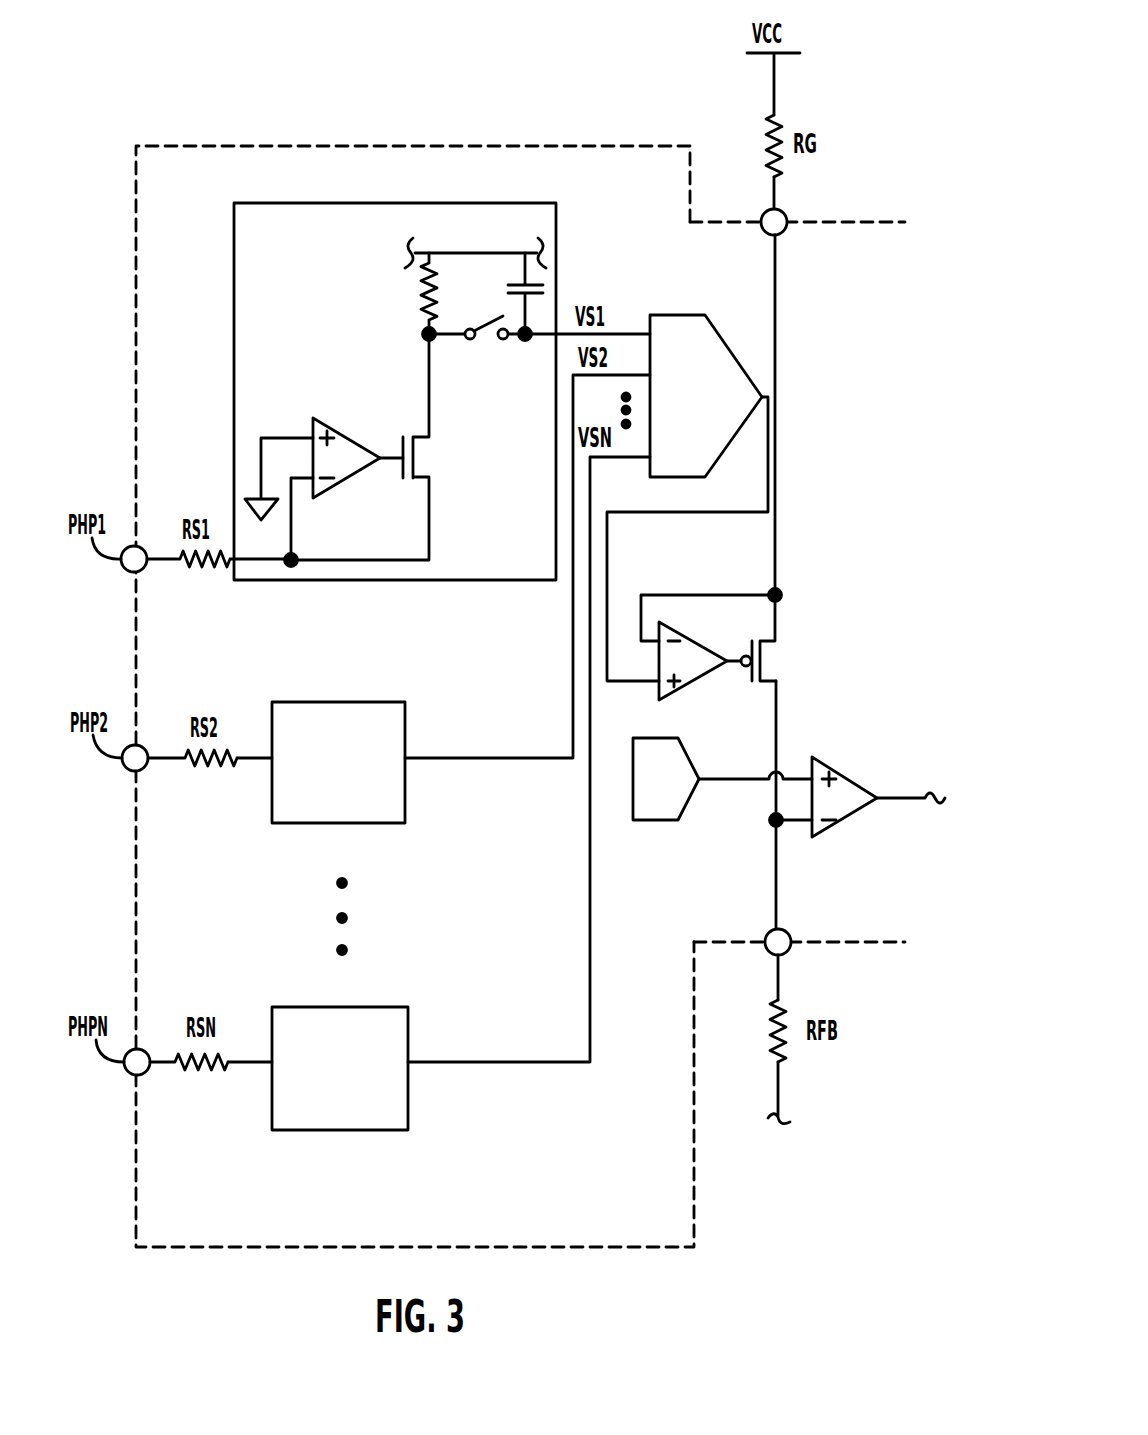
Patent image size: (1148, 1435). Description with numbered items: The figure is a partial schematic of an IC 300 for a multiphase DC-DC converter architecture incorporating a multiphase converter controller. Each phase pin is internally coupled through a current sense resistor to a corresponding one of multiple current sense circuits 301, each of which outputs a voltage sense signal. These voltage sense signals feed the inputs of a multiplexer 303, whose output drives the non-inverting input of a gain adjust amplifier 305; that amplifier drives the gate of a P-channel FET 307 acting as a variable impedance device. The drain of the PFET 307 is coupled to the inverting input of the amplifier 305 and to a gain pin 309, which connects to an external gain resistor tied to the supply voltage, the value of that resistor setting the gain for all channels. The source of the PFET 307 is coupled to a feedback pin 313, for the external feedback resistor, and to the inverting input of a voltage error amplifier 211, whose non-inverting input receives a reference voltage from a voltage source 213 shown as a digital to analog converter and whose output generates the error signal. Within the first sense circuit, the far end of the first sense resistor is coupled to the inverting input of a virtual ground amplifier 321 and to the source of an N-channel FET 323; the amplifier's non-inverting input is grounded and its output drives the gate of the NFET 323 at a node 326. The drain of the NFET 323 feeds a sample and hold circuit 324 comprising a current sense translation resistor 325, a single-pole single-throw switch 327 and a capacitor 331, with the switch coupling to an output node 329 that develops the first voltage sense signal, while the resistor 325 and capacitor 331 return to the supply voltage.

The IC 300 is at (248, 145).
The current sense circuits 301 is at (556, 225).
The multiplexer 303 is at (716, 322).
The gain adjust amplifier 305 is at (673, 694).
The P-channel FET 307 is at (777, 658).
The gain pin 309 is at (786, 210).
The feedback pin 313 is at (788, 932).
The virtual ground amplifier 321 is at (345, 432).
The N-channel FET 323 is at (418, 435).
The sample and hold circuit 324 is at (445, 242).
The current sense translation resistor 325 is at (426, 300).
The node 326 is at (426, 331).
The SPST switch 327 is at (503, 341).
The output node 329 is at (528, 330).
The capacitor 331 is at (534, 284).
The voltage error amplifier 211 is at (856, 776).
The voltage source 213 is at (660, 738).